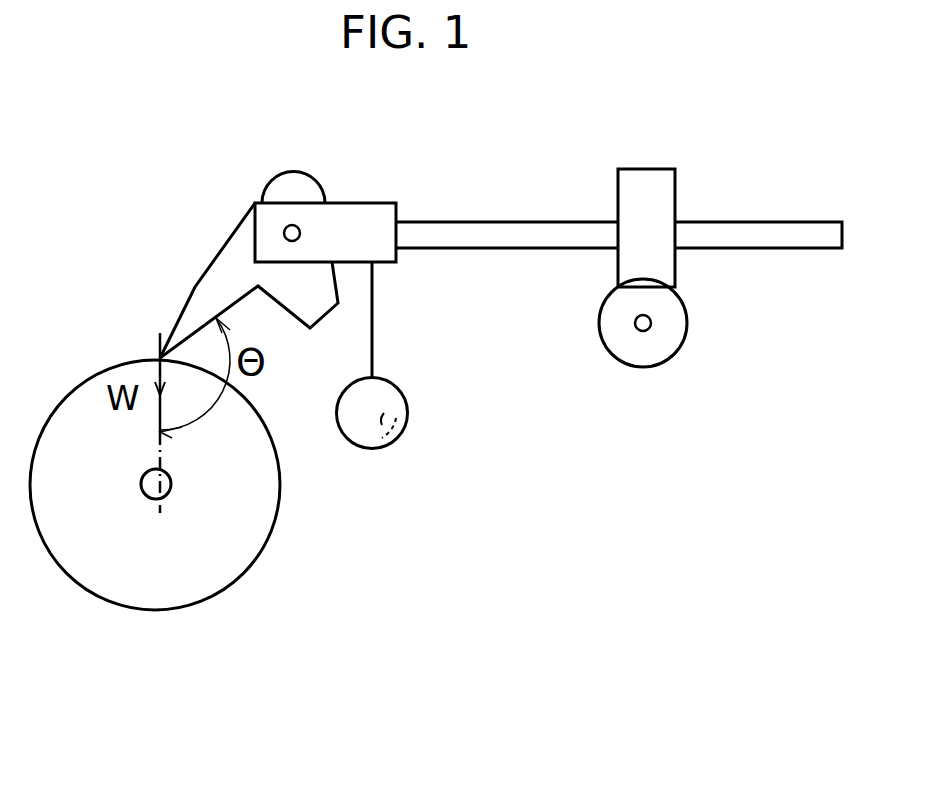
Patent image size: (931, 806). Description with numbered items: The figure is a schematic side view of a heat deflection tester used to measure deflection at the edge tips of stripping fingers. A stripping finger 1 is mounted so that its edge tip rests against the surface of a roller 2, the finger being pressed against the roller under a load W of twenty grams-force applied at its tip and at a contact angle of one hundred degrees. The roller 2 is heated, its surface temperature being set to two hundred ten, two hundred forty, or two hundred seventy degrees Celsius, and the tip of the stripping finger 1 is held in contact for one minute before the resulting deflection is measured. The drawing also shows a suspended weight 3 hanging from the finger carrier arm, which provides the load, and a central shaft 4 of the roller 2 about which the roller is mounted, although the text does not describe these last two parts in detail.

The stripping finger 1 is at (218, 278).
The roller 2 is at (118, 577).
The weight 3 is at (396, 432).
The shaft 4 is at (171, 487).